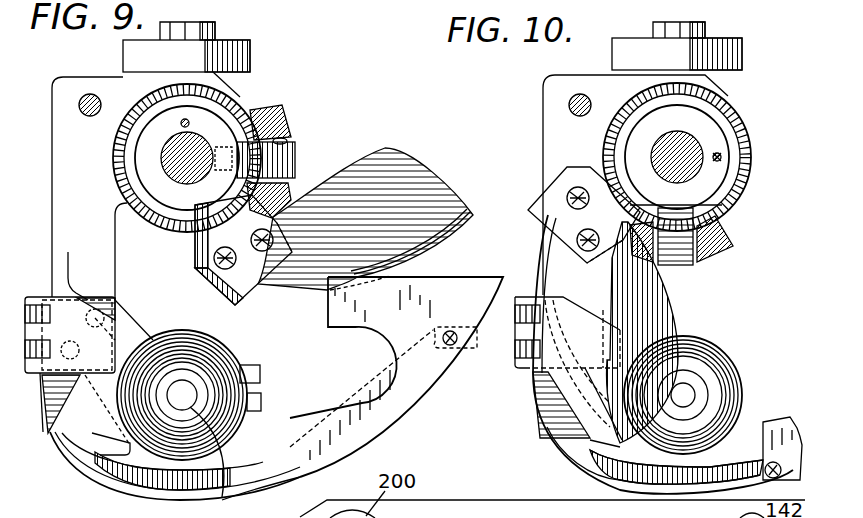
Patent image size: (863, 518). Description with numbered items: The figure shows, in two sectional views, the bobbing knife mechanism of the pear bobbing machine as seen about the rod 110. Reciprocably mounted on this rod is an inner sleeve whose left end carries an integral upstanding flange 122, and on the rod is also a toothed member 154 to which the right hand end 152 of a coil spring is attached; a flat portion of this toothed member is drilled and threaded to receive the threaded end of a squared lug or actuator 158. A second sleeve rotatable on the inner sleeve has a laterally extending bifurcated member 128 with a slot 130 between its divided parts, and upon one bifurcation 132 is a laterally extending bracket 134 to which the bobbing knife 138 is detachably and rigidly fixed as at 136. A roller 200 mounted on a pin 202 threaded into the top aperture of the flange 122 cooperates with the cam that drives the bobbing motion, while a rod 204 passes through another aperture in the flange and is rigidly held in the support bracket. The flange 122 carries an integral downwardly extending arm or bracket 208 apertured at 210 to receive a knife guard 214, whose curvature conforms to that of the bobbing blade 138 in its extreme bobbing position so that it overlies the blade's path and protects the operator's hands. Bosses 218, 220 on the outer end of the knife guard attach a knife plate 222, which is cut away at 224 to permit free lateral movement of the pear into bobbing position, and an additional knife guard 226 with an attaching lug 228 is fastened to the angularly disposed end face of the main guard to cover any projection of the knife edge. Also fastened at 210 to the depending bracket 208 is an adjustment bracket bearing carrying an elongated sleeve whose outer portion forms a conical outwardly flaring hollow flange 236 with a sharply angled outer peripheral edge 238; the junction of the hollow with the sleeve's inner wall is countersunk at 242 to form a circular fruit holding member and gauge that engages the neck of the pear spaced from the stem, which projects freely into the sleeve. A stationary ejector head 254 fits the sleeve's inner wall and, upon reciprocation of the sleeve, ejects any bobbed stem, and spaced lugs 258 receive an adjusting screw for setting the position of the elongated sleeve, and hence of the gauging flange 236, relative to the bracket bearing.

In FIG. 9, the rod 110 is at (200, 143).
In FIG. 10, the rod 110 is at (697, 145).
In FIG. 9, the upstanding flange 122 is at (146, 184).
In FIG. 10, the upstanding flange 122 is at (545, 86).
In FIG. 9, the bifurcated member 128 is at (283, 116).
In FIG. 10, the bifurcated member 128 is at (715, 252).
In FIG. 9, the slot 130 is at (286, 141).
In FIG. 9, the bifurcation 132 is at (280, 195).
In FIG. 10, the bifurcation 132 is at (650, 258).
In FIG. 9, the bracket 134 is at (240, 298).
In FIG. 10, the bracket 134 is at (545, 196).
In FIG. 9, the fastening 136 is at (264, 252).
In FIG. 10, the fastening 136 is at (575, 240).
In FIG. 9, the bobbing knife 138 is at (396, 158).
In FIG. 10, the bobbing knife 138 is at (632, 308).
In FIG. 9, the right hand end of spring 152 is at (189, 120).
In FIG. 10, the right hand end of spring 152 is at (722, 160).
In FIG. 10, the toothed member 154 is at (722, 152).
In FIG. 9, the squared lug or actuator 158 is at (285, 160).
In FIG. 10, the squared lug or actuator 158 is at (720, 209).
In FIG. 9, the roller 200 is at (245, 58).
In FIG. 10, the roller 200 is at (727, 52).
In FIG. 9, the pin 202 is at (210, 22).
In FIG. 10, the pin 202 is at (700, 22).
In FIG. 9, the rod 204 is at (88, 94).
In FIG. 10, the rod 204 is at (568, 107).
In FIG. 9, the downwardly extending arm or bracket 208 is at (93, 269).
In FIG. 9, the aperture 210 is at (118, 304).
In FIG. 10, the aperture 210 is at (567, 332).
In FIG. 9, the knife guard 214 is at (130, 478).
In FIG. 9, the boss 218 is at (262, 402).
In FIG. 9, the boss 220 is at (457, 350).
In FIG. 9, the knife plate 222 is at (463, 288).
In FIG. 10, the knife plate 222 is at (772, 425).
In FIG. 9, the cut-away 224 is at (342, 371).
In FIG. 9, the additional knife guard 226 is at (75, 410).
In FIG. 10, the additional knife guard 226 is at (577, 412).
In FIG. 9, the attaching lug 228 is at (81, 264).
In FIG. 9, the conical outwardly flaring hollow flange 236 is at (194, 340).
In FIG. 10, the conical outwardly flaring hollow flange 236 is at (705, 356).
In FIG. 10, the outer peripheral edge 238 is at (735, 372).
In FIG. 9, the countersink 242 is at (205, 375).
In FIG. 9, the ejector head 254 is at (261, 497).
In FIG. 9, the spaced lugs 258 is at (260, 380).